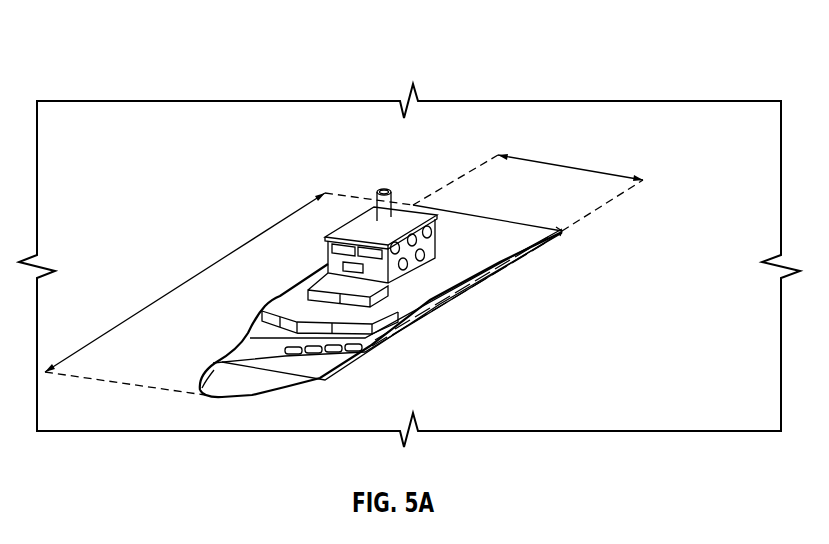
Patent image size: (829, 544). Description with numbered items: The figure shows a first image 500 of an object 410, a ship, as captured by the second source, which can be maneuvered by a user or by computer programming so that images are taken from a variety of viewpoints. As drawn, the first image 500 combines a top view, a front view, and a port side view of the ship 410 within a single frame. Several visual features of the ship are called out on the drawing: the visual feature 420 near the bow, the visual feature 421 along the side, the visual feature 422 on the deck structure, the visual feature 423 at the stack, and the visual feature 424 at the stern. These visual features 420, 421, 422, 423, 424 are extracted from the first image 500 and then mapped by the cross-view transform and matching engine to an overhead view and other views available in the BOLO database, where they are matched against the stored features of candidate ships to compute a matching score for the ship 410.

The first image 500 is at (641, 62).
The object 410 is at (385, 275).
The visual feature 420 is at (215, 380).
The visual feature 421 is at (370, 347).
The visual feature 422 is at (288, 308).
The visual feature 423 is at (385, 212).
The visual feature 424 is at (552, 232).